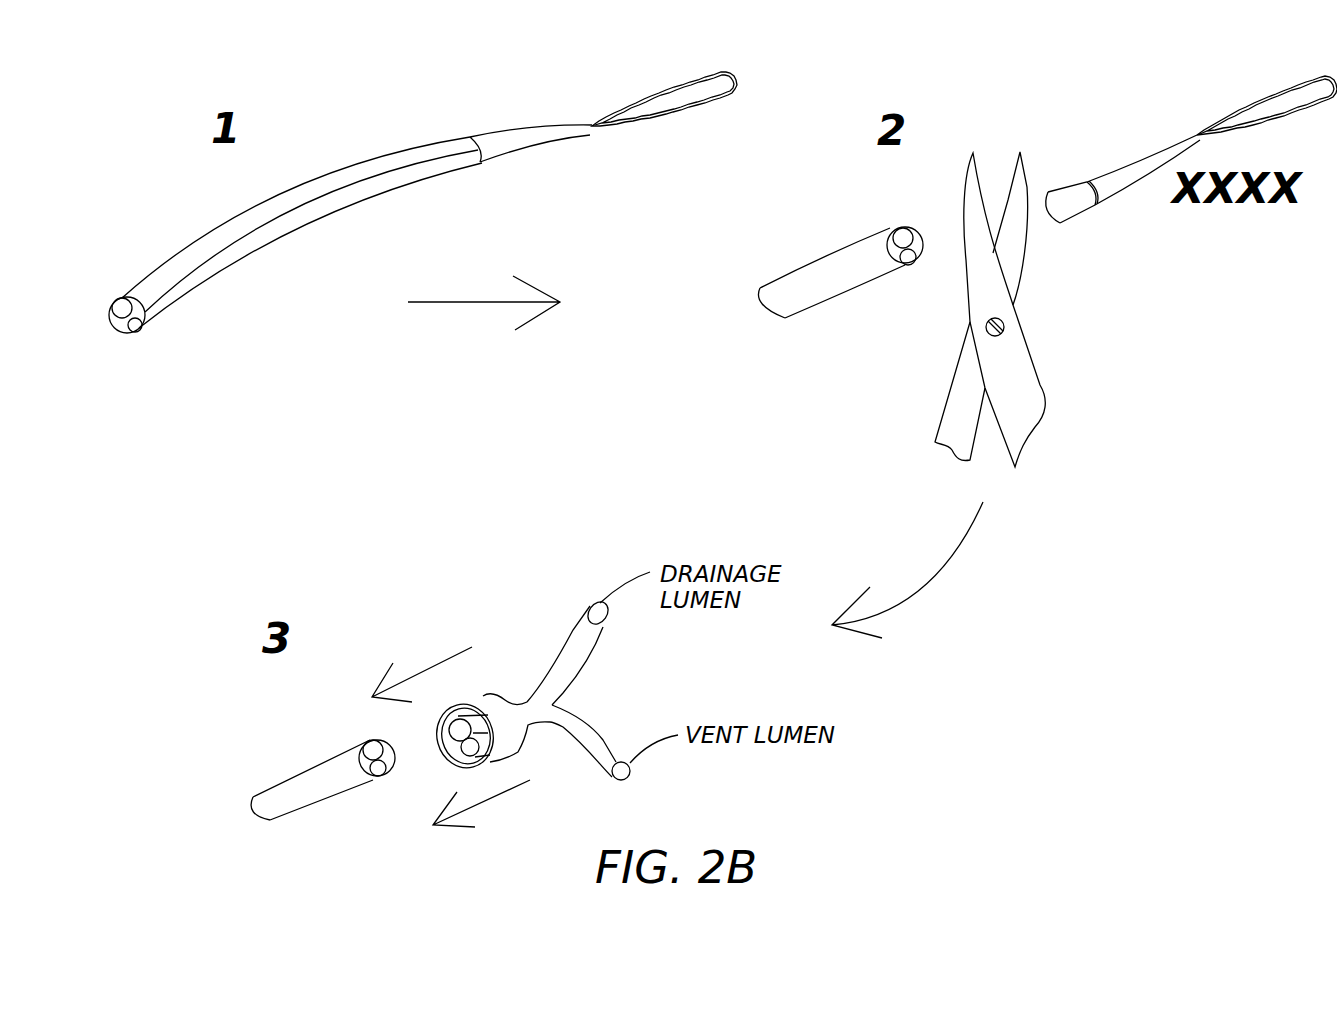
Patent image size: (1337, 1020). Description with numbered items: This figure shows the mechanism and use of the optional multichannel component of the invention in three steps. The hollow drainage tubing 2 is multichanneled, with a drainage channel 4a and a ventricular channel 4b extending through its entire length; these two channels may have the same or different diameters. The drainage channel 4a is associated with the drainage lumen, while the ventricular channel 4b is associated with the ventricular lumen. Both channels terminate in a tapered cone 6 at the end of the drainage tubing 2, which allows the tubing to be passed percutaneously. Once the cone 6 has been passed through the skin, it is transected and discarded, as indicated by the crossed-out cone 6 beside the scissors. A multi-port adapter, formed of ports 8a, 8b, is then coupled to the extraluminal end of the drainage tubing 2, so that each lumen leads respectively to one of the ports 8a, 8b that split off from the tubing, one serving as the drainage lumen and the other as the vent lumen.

The drainage tubing 2 is at (516, 478).
The drainage channel 4a is at (120, 335).
The ventricular channel 4b is at (145, 330).
The tapered cone 6 is at (508, 128).
The port 8a is at (577, 632).
The port 8b is at (593, 722).